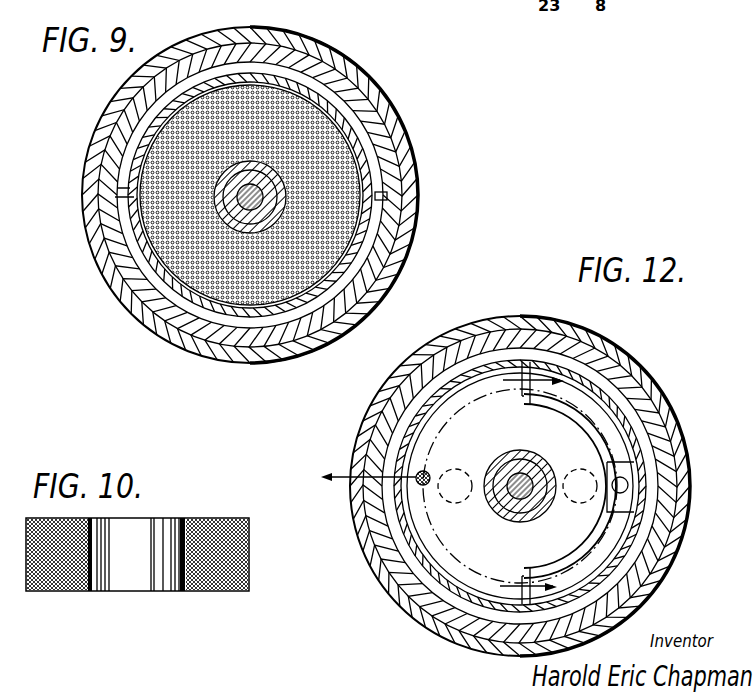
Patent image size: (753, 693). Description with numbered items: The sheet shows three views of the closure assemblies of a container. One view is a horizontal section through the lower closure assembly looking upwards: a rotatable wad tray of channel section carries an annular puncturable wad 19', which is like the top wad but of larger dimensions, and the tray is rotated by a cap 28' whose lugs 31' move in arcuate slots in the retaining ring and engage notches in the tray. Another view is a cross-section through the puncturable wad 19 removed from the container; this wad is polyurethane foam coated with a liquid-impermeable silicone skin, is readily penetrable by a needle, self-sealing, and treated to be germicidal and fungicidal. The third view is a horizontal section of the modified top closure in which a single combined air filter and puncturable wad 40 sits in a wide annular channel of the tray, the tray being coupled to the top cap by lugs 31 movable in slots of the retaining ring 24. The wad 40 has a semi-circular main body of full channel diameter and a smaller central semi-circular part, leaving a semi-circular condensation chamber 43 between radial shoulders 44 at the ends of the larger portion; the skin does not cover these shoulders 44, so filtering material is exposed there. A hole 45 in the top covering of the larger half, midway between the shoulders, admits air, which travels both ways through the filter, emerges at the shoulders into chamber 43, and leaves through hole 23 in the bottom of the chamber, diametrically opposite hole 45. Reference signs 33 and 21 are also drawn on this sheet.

In FIG. 9, the annular puncturable wad 19' is at (253, 160).
In FIG. 9, the cap 28' is at (250, 200).
In FIG. 9, the lugs 31' is at (253, 195).
In FIG. 10, the puncturable wad 19 is at (212, 580).
In FIG. 12, the radial shoulders 44 is at (534, 362).
In FIG. 12, the condensation chamber 43 is at (594, 416).
In FIG. 12, the hole 23 is at (624, 482).
In FIG. 12, the lugs 31 is at (520, 485).
In FIG. 12, the hole 45 is at (427, 472).
In FIG. 12, the inner sleeve 33 is at (642, 592).
In FIG. 12, the inner ring 21 is at (612, 612).
In FIG. 12, the retaining ring 24 is at (450, 613).
In FIG. 12, the combined air filter and puncturable wad 40 is at (440, 530).